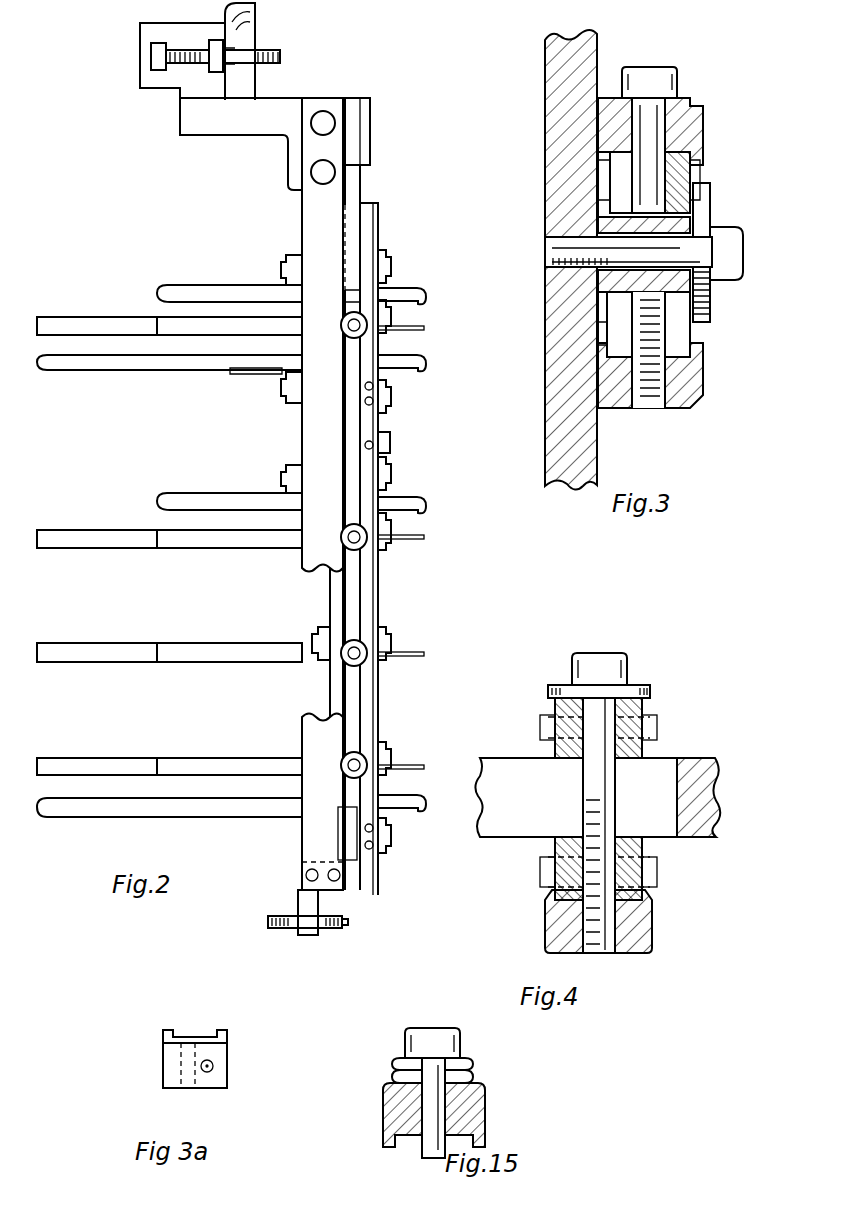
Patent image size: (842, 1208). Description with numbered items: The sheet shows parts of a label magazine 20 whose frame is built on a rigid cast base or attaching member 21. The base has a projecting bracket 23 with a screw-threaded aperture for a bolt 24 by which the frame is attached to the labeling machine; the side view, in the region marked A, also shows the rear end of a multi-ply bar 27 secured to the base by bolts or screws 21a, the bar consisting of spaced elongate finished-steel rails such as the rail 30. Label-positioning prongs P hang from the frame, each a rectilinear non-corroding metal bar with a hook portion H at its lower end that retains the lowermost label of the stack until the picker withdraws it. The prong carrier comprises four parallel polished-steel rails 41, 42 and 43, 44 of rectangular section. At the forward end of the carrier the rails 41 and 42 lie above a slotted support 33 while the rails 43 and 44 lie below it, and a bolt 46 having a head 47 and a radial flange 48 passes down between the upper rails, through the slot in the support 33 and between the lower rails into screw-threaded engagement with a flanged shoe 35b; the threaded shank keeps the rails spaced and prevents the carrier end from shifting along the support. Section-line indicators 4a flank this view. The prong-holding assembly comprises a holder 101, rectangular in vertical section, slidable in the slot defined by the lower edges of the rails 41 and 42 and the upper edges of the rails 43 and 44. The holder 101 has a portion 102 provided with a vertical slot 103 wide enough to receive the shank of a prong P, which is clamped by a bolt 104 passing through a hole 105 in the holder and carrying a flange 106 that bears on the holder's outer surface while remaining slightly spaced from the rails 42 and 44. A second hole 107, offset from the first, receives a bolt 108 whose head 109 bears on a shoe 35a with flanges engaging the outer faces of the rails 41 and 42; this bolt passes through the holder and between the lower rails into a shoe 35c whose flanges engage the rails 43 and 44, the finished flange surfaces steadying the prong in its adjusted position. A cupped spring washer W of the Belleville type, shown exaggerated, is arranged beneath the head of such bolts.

In FIG. 2, the label magazine 20 is at (245, 468).
In FIG. 2, the base or attaching member 21 is at (292, 126).
In FIG. 2, the bolts or screws 21a is at (328, 168).
In FIG. 2, the projecting bracket 23 is at (234, 36).
In FIG. 2, the bolt 24 is at (175, 62).
In FIG. 2, the multi-ply bar 27 is at (272, 232).
In FIG. 2, the elongate rail 30 is at (302, 447).
In FIG. 4, the support 33 is at (483, 776).
In FIG. 3, the shoe 35a is at (688, 118).
In FIG. 15, the shoe 35a is at (486, 1120).
In FIG. 4, the flanged shoe 35b is at (642, 916).
In FIG. 3, the shoe 35c is at (692, 410).
In FIG. 3, the rail 41 is at (620, 170).
In FIG. 4, the rail 41 is at (556, 712).
In FIG. 3, the rail 42 is at (682, 178).
In FIG. 4, the rail 42 is at (630, 713).
In FIG. 3, the rail 43 is at (605, 328).
In FIG. 4, the rail 43 is at (556, 850).
In FIG. 3, the rail 44 is at (680, 338).
In FIG. 4, the rail 44 is at (645, 852).
In FIG. 4, the bolt 46 is at (590, 804).
In FIG. 4, the head 47 is at (625, 660).
In FIG. 15, the head 47 is at (456, 1052).
In FIG. 4, the radial flange 48 is at (553, 690).
In FIG. 4, the section line 4a is at (493, 746).
In FIG. 3, the holder 101 is at (732, 245).
In FIG. 3A, the holder 101 is at (202, 1050).
In FIG. 3A, the portion 102 is at (218, 1033).
In FIG. 3A, the vertical slot 103 is at (188, 1033).
In FIG. 3, the bolt 104 is at (676, 250).
In FIG. 3A, the hole 105 is at (182, 1090).
In FIG. 3, the flange 106 is at (704, 302).
In FIG. 3A, the second hole 107 is at (213, 1067).
In FIG. 3, the bolt 108 is at (655, 110).
In FIG. 15, the bolt 108 is at (422, 1150).
In FIG. 3, the head 109 is at (640, 80).
In FIG. 2, the bracket assembly A is at (258, 95).
In FIG. 2, the hook portion H is at (420, 290).
In FIG. 2, the label-positioning prong P is at (158, 537).
In FIG. 3, the label-positioning prong P is at (560, 400).
In FIG. 15, the spring washer W is at (380, 1072).